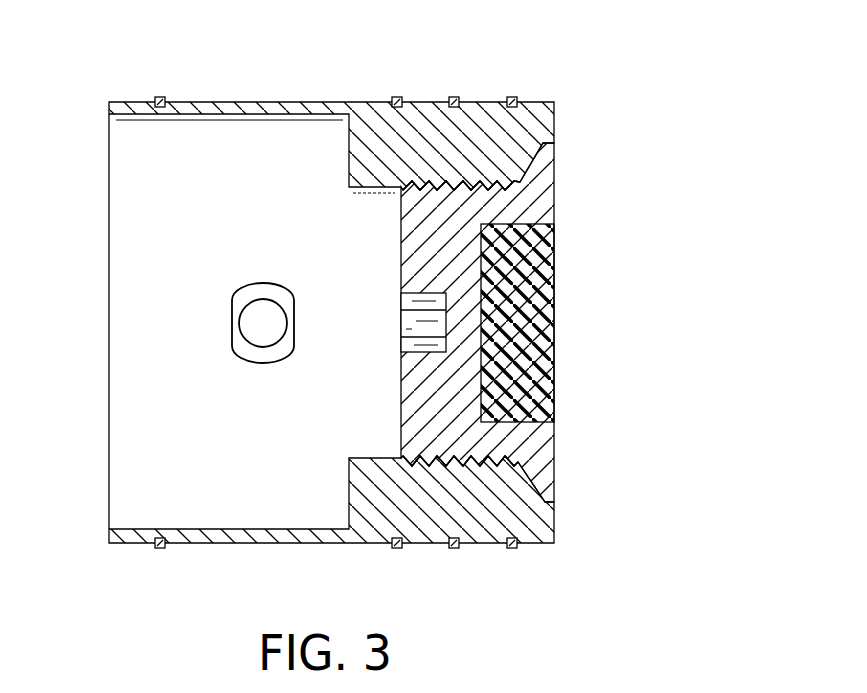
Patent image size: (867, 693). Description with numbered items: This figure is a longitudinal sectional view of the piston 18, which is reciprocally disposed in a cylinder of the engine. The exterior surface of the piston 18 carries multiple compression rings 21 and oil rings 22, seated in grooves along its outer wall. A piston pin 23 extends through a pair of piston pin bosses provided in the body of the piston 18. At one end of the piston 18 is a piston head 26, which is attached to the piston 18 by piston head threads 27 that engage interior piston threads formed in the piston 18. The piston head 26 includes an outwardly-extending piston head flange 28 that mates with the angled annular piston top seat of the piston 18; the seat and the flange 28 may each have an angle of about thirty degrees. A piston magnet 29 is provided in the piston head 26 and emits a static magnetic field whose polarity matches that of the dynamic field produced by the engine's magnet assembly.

The piston 18 is at (271, 101).
The compression rings 21 is at (512, 97).
The oil rings 22 is at (160, 97).
The piston pin 23 is at (263, 323).
The piston head 26 is at (565, 446).
The piston head threads 27 is at (488, 465).
The piston head flange 28 is at (535, 465).
The piston magnet 29 is at (556, 296).